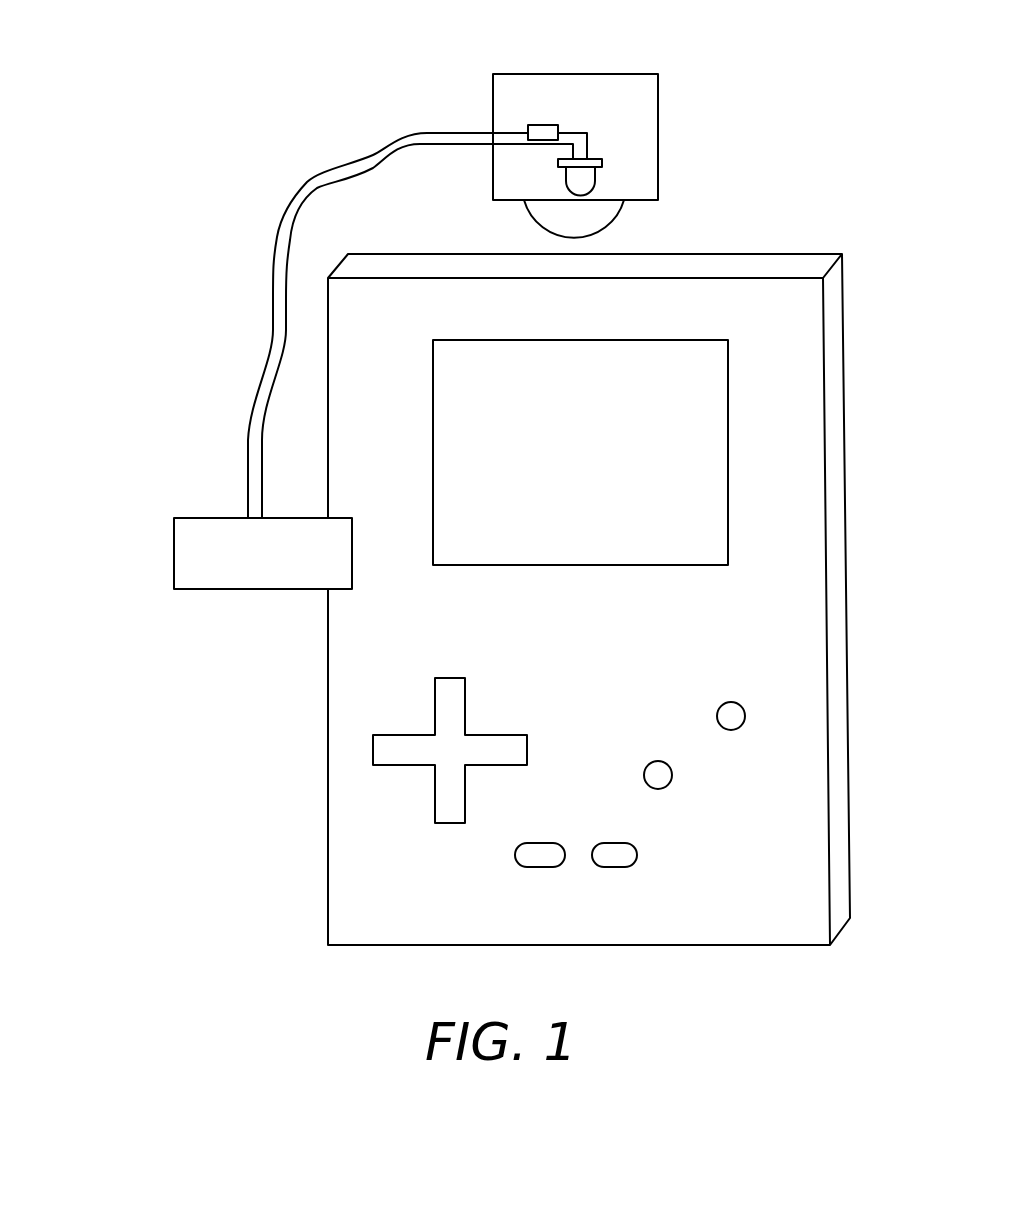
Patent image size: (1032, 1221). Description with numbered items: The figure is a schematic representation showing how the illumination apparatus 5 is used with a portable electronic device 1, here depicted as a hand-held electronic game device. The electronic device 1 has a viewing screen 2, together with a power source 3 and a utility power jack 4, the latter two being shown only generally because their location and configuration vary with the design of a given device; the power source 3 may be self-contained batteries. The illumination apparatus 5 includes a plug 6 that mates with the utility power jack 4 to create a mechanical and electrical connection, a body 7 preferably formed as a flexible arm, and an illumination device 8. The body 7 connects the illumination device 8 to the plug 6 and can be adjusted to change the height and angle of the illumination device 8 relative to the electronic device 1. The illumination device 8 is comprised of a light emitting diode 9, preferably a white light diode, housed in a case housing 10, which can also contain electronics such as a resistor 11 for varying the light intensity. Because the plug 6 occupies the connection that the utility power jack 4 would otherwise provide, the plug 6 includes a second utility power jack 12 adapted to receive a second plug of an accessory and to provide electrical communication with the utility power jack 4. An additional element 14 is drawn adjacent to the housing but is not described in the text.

The electronic device 1 is at (783, 647).
The viewing screen 2 is at (692, 430).
The power source 3 is at (356, 552).
The utility power jack 4 is at (373, 873).
The illumination apparatus 5 is at (269, 283).
The plug 6 is at (254, 593).
The body 7 is at (269, 337).
The illumination device 8 is at (664, 145).
The light emitting diode 9 is at (594, 173).
The case housing 10 is at (658, 98).
The resistor 11 is at (540, 124).
The second utility power jack 12 is at (171, 557).
The attachment band 14 is at (622, 206).